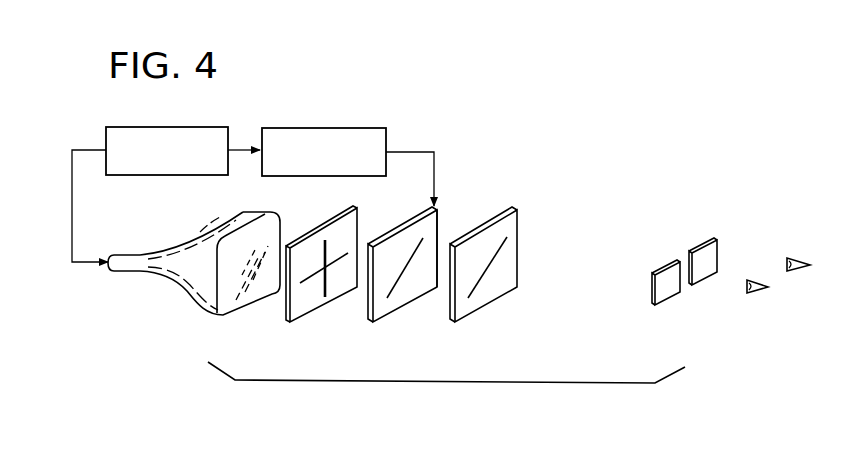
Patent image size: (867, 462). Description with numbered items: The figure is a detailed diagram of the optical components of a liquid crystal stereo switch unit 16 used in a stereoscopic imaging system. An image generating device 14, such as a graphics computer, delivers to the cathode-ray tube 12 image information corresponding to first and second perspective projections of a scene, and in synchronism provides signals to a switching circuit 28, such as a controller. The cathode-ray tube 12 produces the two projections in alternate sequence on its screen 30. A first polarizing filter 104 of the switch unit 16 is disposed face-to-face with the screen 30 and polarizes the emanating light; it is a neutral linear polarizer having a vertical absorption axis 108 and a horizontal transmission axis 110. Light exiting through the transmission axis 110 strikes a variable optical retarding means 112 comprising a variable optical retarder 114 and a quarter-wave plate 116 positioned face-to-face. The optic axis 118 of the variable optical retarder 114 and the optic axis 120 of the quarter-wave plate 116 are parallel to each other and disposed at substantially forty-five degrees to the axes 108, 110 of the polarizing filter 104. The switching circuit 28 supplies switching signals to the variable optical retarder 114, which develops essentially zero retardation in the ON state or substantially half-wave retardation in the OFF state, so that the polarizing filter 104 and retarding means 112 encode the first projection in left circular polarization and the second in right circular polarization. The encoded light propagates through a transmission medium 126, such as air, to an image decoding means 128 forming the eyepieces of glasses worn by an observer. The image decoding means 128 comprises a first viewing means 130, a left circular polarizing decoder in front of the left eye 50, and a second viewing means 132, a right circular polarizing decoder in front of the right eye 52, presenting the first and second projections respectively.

The cathode-ray tube 12 is at (194, 283).
The image generating device 14 is at (172, 127).
The liquid crystal stereo switch unit 16 is at (473, 385).
The switching circuit 28 is at (330, 128).
The screen 30 is at (227, 298).
The left eye 50 is at (757, 279).
The right eye 52 is at (800, 257).
The polarizing filter 104 is at (319, 276).
The vertical absorption axis 108 is at (325, 241).
The horizontal transmission axis 110 is at (307, 281).
The variable optical retarding means 112 is at (424, 281).
The variable optical retarder 114 is at (440, 228).
The quarter-wave plate 116 is at (509, 254).
The optic axis 118 is at (408, 262).
The optic axis 120 is at (493, 260).
The transmission medium 126 is at (602, 284).
The image decoding means 128 is at (698, 288).
The first viewing means 130 is at (667, 263).
The second viewing means 132 is at (707, 245).